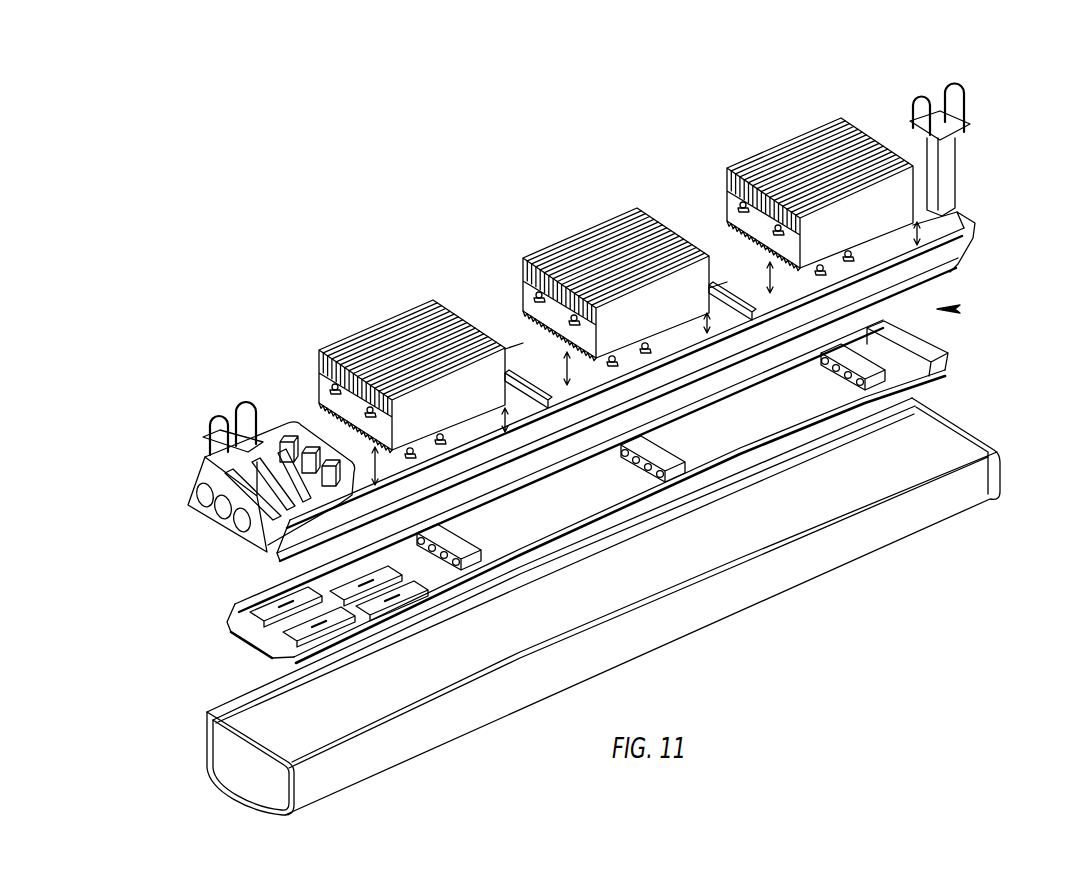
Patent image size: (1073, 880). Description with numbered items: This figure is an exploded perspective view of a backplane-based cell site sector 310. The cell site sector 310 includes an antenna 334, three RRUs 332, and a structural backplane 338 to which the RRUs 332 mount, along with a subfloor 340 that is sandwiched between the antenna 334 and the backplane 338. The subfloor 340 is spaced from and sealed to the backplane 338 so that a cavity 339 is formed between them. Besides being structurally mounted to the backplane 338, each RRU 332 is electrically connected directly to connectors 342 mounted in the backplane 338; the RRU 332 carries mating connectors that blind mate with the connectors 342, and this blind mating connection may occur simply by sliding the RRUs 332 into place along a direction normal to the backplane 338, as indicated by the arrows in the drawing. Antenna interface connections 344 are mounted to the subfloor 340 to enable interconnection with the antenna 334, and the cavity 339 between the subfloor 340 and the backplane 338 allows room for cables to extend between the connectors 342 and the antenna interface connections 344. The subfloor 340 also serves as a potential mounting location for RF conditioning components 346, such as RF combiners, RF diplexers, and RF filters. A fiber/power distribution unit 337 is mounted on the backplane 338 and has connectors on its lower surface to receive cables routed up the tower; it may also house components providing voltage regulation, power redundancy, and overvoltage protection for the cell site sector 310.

The cell site sector 310 is at (752, 64).
The RRU 332 is at (320, 353).
The antenna 334 is at (267, 785).
The fiber/power distribution unit 337 is at (200, 480).
The structural backplane 338 is at (880, 253).
The cavity 339 is at (957, 309).
The subfloor 340 is at (920, 349).
The connectors 342 is at (818, 275).
The antenna interface connections 344 is at (920, 385).
The RF conditioning components 346 is at (258, 617).